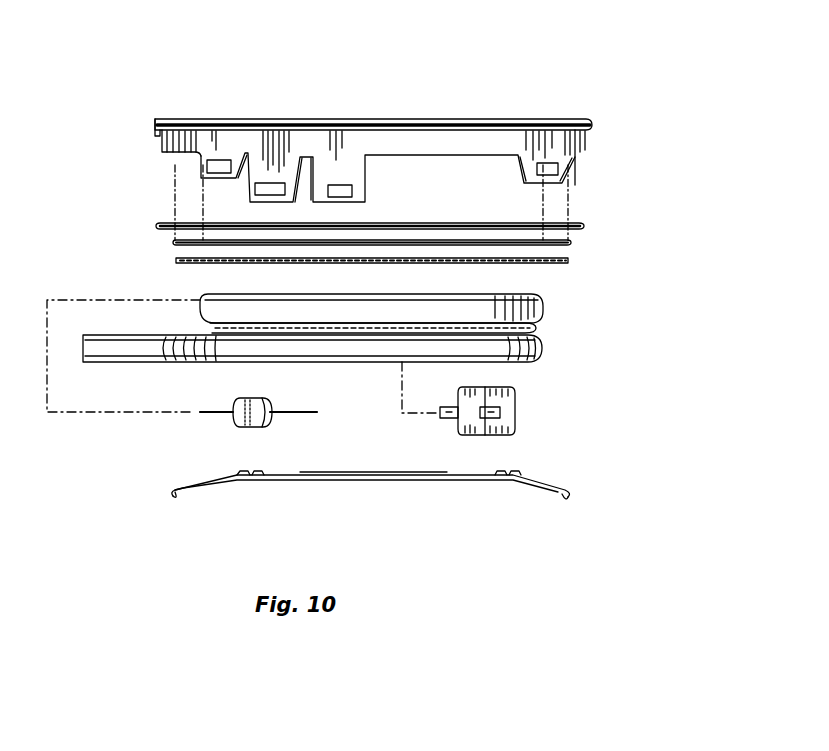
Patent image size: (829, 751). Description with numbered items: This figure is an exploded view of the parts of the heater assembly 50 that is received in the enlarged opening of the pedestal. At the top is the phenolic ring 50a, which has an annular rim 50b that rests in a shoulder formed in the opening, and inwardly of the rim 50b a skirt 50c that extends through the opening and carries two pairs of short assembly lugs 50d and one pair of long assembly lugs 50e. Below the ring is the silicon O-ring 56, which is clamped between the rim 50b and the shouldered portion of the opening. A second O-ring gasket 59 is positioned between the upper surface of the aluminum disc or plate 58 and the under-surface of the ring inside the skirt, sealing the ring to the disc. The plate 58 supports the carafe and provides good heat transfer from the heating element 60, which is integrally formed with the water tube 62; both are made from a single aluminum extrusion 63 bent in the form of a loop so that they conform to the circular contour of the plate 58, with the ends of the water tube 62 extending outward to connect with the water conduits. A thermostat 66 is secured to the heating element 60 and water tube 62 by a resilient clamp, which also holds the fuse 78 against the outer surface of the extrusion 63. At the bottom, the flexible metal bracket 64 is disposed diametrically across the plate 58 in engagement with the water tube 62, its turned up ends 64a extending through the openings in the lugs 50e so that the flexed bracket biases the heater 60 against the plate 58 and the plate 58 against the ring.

The heater assembly 50 is at (384, 158).
The phenolic ring 50a is at (215, 122).
The annular rim 50b is at (586, 131).
The skirt 50c is at (165, 141).
The short assembly lugs 50d is at (200, 163).
The long assembly lugs 50e is at (252, 193).
The silicon O-ring 56 is at (585, 227).
The second O-ring gasket 59 is at (571, 243).
The aluminum disc or plate 58 is at (571, 262).
The heating element 60 is at (547, 311).
The water tube 62 is at (547, 348).
The aluminum extrusion 63 is at (200, 306).
The fuse 78 is at (240, 398).
The thermostat 66 is at (518, 410).
The flexible metal bracket 64 is at (355, 481).
The turned up ends 64a is at (180, 496).